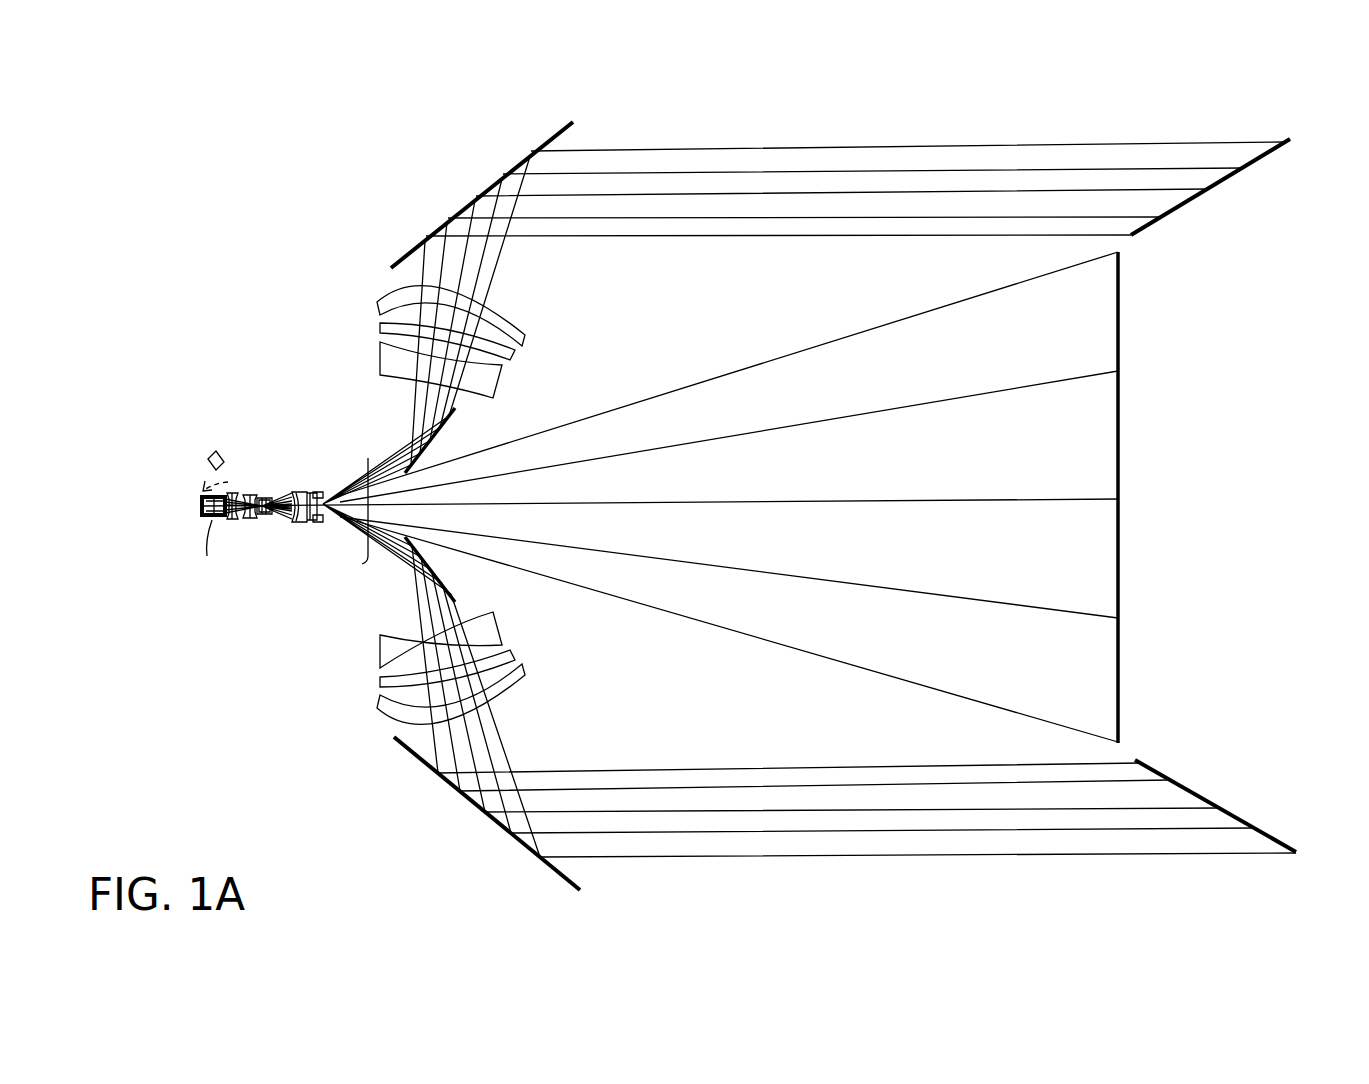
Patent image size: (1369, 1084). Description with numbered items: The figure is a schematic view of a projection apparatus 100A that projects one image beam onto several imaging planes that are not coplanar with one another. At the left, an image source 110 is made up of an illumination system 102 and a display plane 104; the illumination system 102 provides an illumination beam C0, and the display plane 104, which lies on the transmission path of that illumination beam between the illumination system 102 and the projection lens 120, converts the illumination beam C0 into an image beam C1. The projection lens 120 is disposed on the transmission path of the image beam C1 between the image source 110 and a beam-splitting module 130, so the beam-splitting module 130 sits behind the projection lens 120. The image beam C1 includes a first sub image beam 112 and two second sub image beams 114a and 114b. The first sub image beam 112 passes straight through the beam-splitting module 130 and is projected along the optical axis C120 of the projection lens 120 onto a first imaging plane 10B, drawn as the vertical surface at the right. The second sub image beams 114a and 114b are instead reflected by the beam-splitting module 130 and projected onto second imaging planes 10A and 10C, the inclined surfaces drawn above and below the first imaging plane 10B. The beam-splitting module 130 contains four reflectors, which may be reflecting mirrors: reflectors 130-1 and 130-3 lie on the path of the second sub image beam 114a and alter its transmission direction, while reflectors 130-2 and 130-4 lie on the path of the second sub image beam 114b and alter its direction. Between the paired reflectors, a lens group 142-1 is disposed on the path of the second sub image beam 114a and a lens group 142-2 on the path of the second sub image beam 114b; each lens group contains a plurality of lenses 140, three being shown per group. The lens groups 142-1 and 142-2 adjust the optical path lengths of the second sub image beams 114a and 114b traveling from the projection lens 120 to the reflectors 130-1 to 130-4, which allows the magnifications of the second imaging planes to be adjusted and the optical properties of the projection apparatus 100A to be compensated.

The projection apparatus 100A is at (192, 185).
The image source 110 is at (168, 460).
The illumination system 102 is at (212, 458).
The display plane 104 is at (202, 516).
The projection lens 120 is at (262, 522).
The beam-splitting module 130 is at (353, 285).
The reflector 130-1 is at (445, 428).
The reflector 130-2 is at (444, 585).
The reflector 130-3 is at (397, 263).
The reflector 130-4 is at (397, 744).
The lens 140 is at (528, 333).
The lens group 142-1 is at (592, 293).
The lens group 142-2 is at (596, 622).
The first sub image beam 112 is at (732, 499).
The second sub image beam 114a is at (767, 144).
The second sub image beam 114b is at (733, 868).
The second imaging plane 10A is at (1199, 203).
The first imaging plane 10B is at (1126, 488).
The second imaging plane 10C is at (1202, 790).
The image beam C1 is at (284, 529).
The illumination beam C0 is at (232, 476).
The optical axis C120 is at (338, 500).